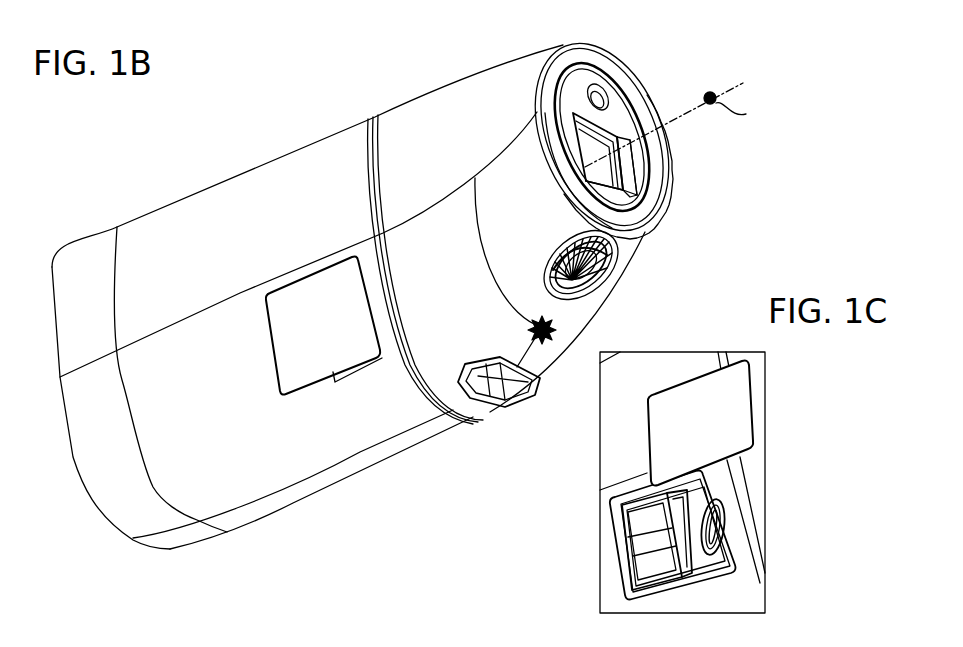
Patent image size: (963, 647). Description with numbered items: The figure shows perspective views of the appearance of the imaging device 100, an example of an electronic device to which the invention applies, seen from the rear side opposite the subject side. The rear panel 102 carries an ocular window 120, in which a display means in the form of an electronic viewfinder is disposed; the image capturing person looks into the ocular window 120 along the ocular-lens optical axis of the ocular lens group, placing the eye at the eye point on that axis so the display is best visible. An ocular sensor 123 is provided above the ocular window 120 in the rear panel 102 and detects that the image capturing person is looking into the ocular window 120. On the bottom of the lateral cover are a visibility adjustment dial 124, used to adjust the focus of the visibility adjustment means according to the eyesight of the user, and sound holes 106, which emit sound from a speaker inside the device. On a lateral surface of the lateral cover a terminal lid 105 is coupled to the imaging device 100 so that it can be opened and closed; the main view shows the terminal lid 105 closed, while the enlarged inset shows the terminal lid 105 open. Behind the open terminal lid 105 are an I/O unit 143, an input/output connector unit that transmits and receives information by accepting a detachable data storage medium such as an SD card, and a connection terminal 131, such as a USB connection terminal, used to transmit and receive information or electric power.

In FIG. 1B, the imaging device 100 is at (250, 110).
In FIG. 1B, the ocular sensor 123 is at (603, 97).
In FIG. 1B, the rear panel 102 is at (623, 113).
In FIG. 1B, the ocular window 120 is at (603, 170).
In FIG. 1B, the visibility adjustment dial 124 is at (628, 258).
In FIG. 1B, the sound holes 106 is at (545, 327).
In FIG. 1B, the terminal lid 105 is at (328, 338).
In FIG. 1C, the terminal lid 105 is at (702, 412).
In FIG. 1C, the I/O unit 143 is at (633, 540).
In FIG. 1C, the connection terminal 131 is at (722, 537).